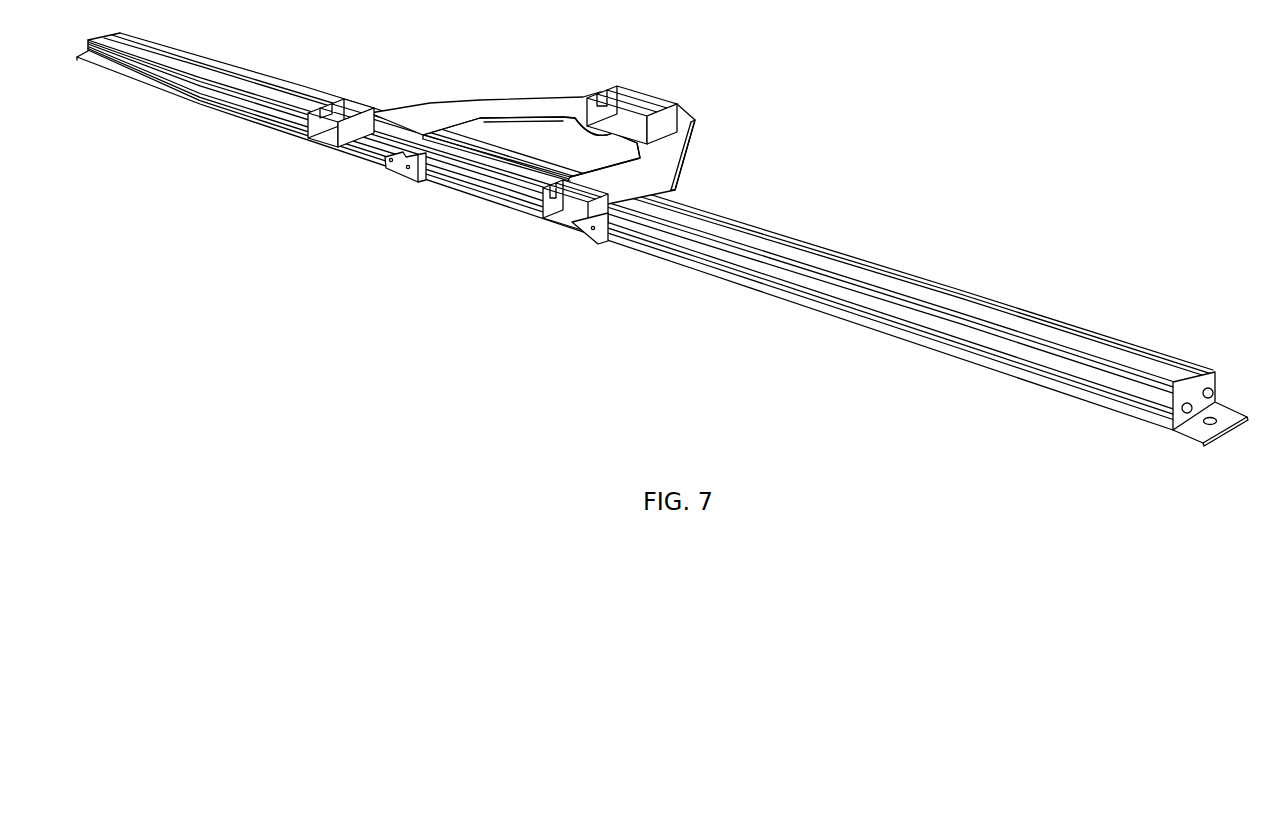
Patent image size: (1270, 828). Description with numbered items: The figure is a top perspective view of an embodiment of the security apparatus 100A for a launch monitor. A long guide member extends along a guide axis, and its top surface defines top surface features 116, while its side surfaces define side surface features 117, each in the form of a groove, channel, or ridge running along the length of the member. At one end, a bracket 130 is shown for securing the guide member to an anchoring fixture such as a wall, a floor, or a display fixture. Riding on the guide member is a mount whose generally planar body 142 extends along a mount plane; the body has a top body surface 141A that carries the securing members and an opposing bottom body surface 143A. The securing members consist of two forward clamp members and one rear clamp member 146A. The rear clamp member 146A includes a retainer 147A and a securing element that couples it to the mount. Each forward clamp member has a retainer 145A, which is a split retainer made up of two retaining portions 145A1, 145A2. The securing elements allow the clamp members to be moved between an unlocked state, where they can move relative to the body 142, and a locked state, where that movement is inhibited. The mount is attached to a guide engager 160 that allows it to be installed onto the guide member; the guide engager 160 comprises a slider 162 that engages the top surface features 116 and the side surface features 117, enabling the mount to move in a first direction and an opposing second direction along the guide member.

The security apparatus 100A is at (669, 239).
The top surface features 116 is at (857, 275).
The side surface features 117 is at (1078, 388).
The bracket 130 is at (1225, 405).
The top body surface 141A is at (688, 160).
The body 142 is at (503, 100).
The bottom body surface 143A is at (493, 175).
The retainer 145A is at (556, 224).
The retaining portion 145A1 is at (314, 140).
The retaining portion 145A2 is at (340, 148).
The rear clamp member 146A is at (680, 100).
The retainer 147A is at (606, 88).
The guide engager 160 is at (407, 167).
The slider 162 is at (594, 244).